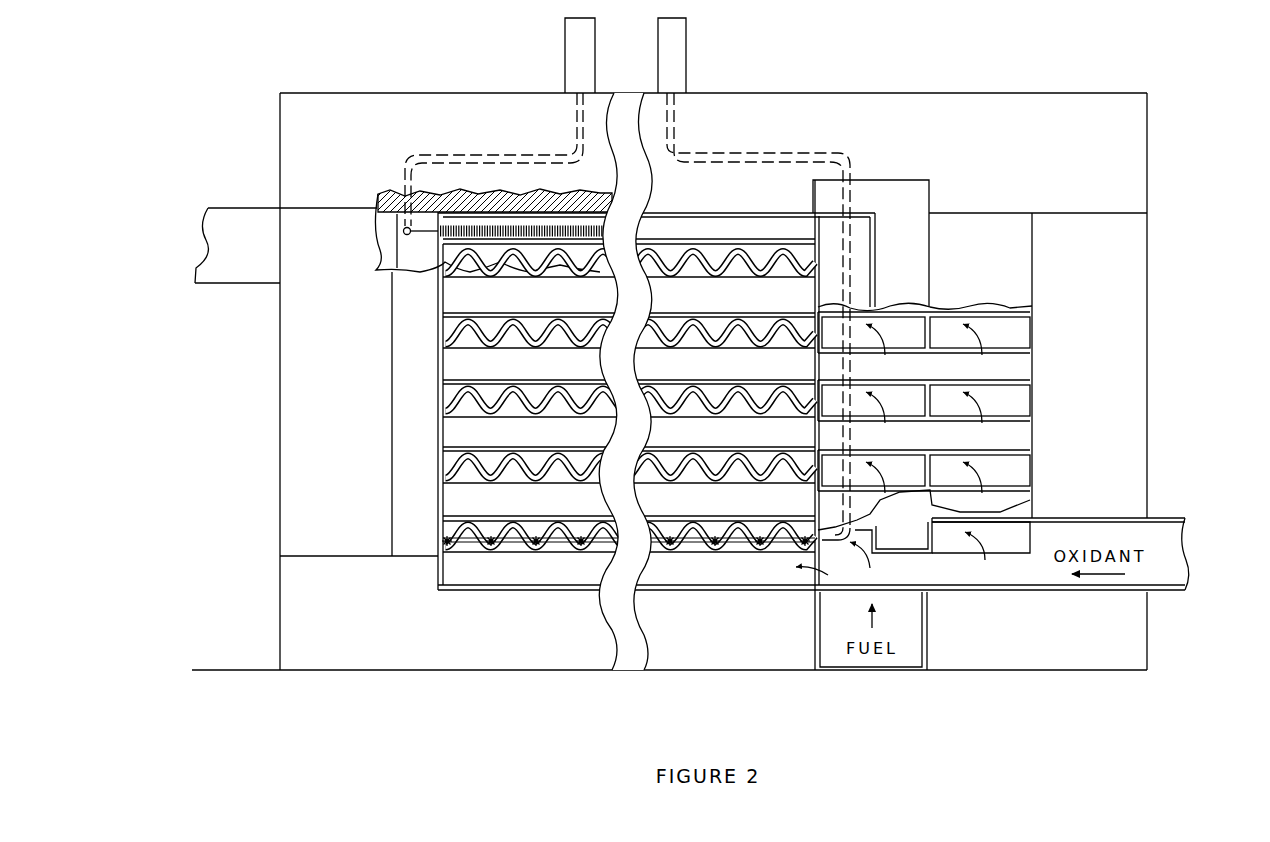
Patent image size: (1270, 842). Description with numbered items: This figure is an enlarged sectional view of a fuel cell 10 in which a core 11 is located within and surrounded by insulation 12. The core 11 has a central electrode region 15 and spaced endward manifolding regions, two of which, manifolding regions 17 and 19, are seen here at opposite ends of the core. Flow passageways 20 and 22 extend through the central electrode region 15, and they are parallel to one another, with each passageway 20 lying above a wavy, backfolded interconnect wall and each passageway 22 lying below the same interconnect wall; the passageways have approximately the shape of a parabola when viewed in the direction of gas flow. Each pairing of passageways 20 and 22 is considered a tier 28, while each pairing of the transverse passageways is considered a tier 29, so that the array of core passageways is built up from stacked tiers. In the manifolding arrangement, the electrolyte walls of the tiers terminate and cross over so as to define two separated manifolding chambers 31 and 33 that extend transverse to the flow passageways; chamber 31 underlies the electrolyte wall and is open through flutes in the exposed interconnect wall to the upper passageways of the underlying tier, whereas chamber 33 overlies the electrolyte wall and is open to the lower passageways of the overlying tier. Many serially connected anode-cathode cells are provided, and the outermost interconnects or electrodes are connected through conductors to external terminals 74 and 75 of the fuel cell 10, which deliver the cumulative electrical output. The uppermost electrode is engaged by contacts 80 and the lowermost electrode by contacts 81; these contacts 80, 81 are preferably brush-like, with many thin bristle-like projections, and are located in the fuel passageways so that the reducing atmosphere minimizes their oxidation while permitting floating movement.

The fuel cell 10 is at (270, 130).
The core 11 is at (768, 419).
The insulation 12 is at (302, 455).
The central electrode region 15 is at (728, 212).
The manifolding region 17 is at (907, 207).
The manifolding region 19 is at (415, 305).
The passageway 20 is at (450, 464).
The passageway 22 is at (472, 472).
The tier 28 is at (716, 553).
The tier 29 is at (455, 293).
The manifolding chamber 31 is at (892, 335).
The manifolding chamber 33 is at (1000, 332).
The external terminal 74 is at (565, 47).
The external terminal 75 is at (686, 50).
The contacts 80 is at (500, 226).
The contacts 81 is at (532, 549).